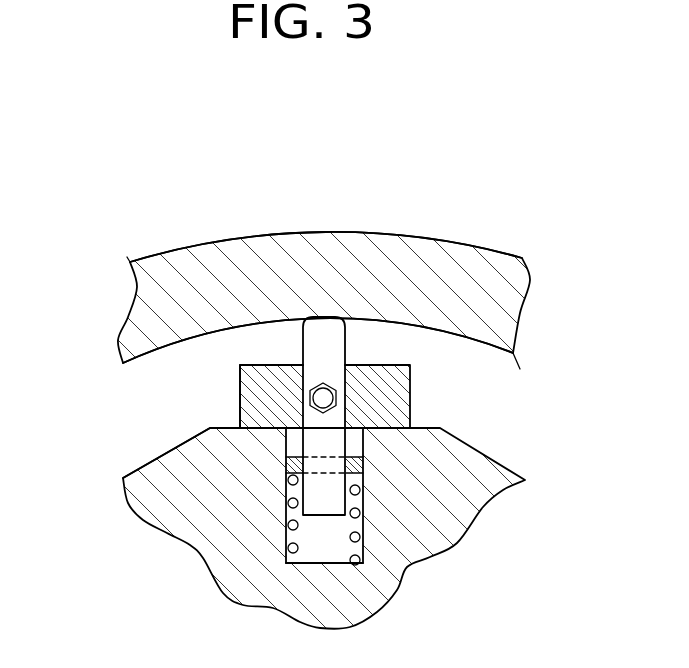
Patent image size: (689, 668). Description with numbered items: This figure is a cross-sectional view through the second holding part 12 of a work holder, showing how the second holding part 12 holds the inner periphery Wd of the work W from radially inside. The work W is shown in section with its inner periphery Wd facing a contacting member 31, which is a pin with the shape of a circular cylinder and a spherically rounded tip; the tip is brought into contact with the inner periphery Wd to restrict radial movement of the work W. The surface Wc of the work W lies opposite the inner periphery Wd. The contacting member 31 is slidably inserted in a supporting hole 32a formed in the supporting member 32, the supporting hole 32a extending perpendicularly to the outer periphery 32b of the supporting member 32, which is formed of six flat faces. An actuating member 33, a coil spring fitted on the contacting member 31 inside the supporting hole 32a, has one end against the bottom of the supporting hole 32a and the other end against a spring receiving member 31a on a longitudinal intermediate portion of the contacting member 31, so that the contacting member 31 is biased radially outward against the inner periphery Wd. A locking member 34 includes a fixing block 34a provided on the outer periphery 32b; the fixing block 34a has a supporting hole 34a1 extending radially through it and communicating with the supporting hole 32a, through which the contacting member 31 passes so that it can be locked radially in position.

The second holding part 12 is at (502, 462).
The contacting member 31 is at (325, 338).
The spring receiving member 31a is at (285, 463).
The supporting member 32 is at (460, 507).
The supporting hole 32a is at (345, 555).
The outer periphery 32b is at (142, 470).
The actuating member 33 is at (288, 549).
The locking member 34 is at (375, 363).
The fixing block 34a is at (270, 365).
The supporting hole 34a1 is at (314, 392).
The work W is at (465, 242).
The outer peripheral surface of workpiece Wc is at (195, 247).
The inner periphery Wd is at (152, 352).